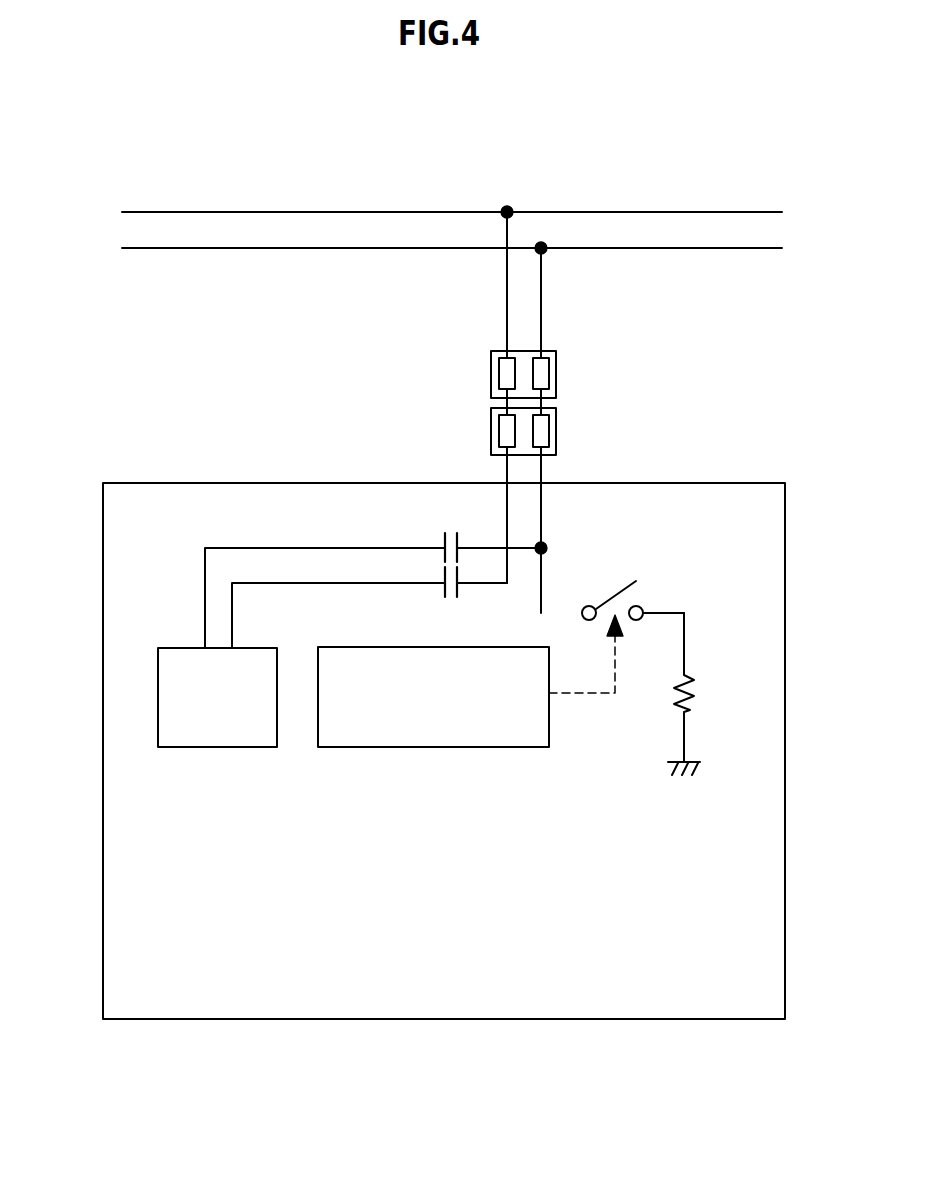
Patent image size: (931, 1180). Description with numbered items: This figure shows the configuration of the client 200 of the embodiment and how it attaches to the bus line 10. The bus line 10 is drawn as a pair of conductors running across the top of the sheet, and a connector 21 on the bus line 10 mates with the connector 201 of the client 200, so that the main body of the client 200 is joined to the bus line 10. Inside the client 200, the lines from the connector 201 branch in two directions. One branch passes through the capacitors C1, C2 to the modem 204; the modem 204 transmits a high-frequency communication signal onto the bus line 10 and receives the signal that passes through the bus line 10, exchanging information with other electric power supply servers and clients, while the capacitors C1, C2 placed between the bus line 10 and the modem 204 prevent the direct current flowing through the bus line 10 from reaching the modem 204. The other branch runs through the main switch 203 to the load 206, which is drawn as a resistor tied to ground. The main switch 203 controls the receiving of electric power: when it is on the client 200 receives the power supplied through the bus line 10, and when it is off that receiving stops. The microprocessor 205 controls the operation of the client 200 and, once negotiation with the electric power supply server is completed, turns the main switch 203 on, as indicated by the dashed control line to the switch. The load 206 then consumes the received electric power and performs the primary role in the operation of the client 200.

The bus line 10 is at (103, 202).
The connector 21 is at (556, 372).
The connector 201 is at (556, 429).
The client 200 is at (742, 455).
The main switch 203 is at (615, 593).
The modem 204 is at (216, 748).
The microprocessor 205 is at (482, 748).
The load 206 is at (681, 707).
The capacitor C1 is at (449, 531).
The capacitor C2 is at (449, 597).